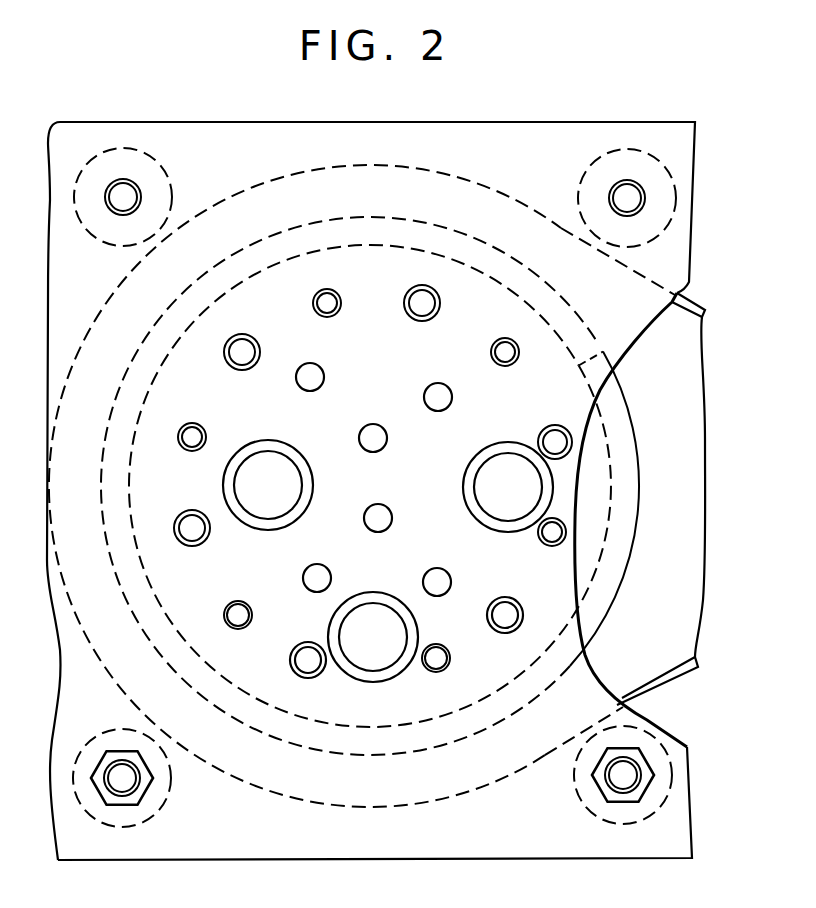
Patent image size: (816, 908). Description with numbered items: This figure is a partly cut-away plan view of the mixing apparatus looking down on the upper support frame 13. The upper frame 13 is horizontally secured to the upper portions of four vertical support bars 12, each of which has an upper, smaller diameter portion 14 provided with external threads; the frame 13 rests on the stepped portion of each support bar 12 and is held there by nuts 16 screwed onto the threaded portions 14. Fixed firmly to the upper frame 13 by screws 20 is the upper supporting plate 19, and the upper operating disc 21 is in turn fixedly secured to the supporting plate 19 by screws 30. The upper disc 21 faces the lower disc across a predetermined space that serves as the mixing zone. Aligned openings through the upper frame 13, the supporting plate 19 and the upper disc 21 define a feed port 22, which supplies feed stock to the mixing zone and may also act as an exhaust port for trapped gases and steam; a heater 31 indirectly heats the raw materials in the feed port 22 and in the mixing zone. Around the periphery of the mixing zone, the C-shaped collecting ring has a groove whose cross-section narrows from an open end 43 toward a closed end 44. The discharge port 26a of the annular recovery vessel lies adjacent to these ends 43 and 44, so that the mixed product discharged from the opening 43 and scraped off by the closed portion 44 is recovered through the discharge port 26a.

The support bar 12 is at (155, 815).
The upper support frame 13 is at (278, 825).
The upper, smaller diameter portion 14 is at (130, 780).
The nut 16 is at (115, 806).
The upper supporting plate 19 is at (593, 658).
The screw 20 is at (312, 665).
The upper operating disc 21 is at (566, 346).
The feed port 22 is at (272, 508).
The discharge port 26a is at (670, 399).
The screw 30 is at (240, 618).
The heater 31 is at (318, 378).
The open end 43 is at (599, 352).
The closed end 44 is at (614, 528).